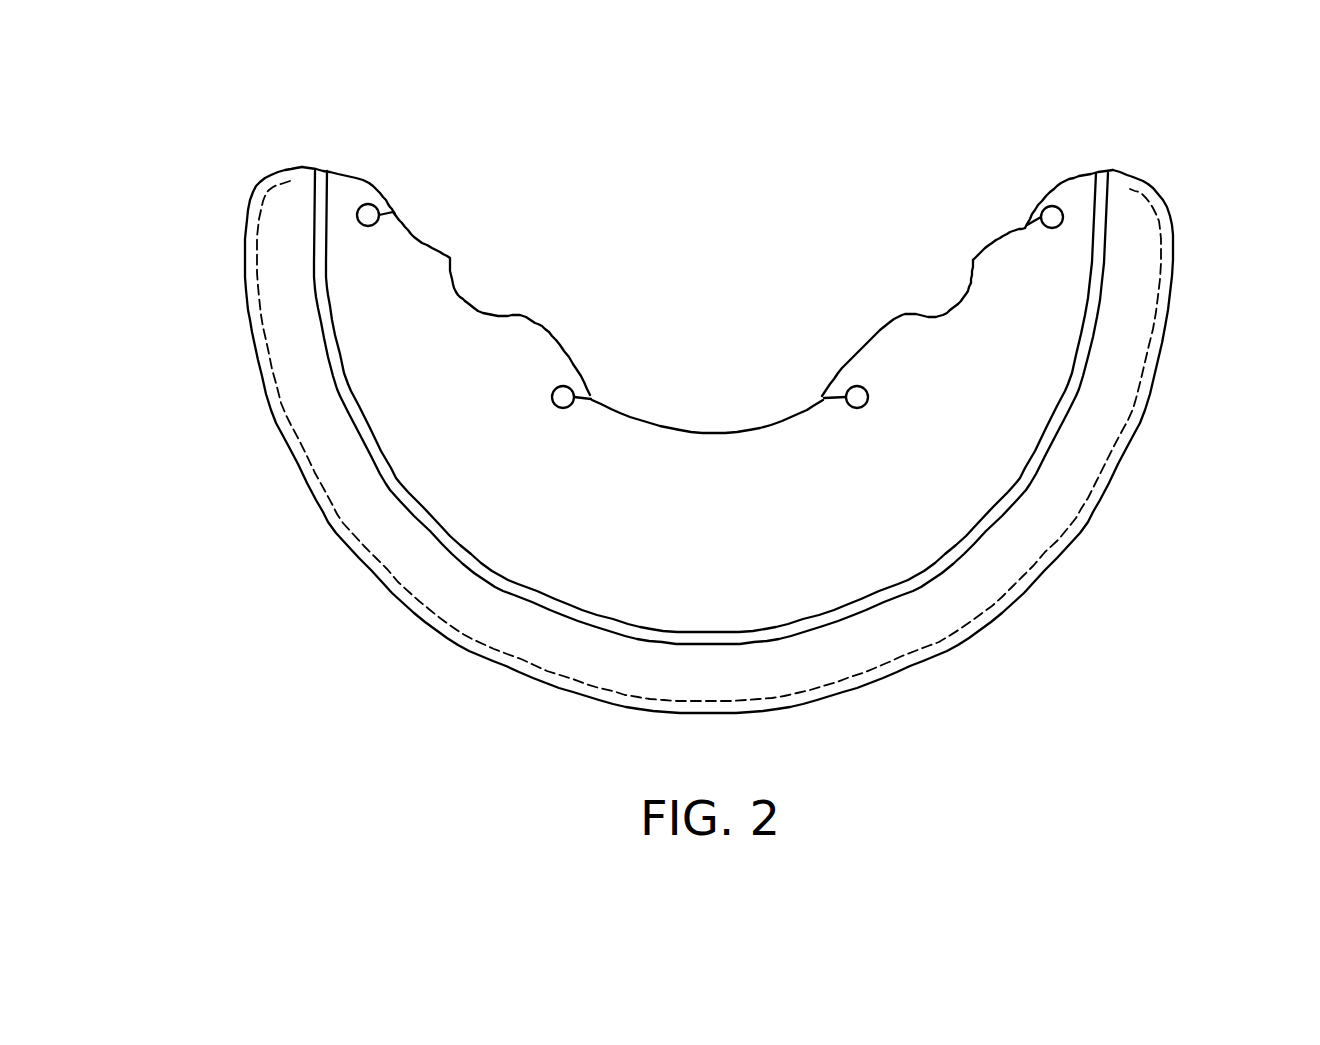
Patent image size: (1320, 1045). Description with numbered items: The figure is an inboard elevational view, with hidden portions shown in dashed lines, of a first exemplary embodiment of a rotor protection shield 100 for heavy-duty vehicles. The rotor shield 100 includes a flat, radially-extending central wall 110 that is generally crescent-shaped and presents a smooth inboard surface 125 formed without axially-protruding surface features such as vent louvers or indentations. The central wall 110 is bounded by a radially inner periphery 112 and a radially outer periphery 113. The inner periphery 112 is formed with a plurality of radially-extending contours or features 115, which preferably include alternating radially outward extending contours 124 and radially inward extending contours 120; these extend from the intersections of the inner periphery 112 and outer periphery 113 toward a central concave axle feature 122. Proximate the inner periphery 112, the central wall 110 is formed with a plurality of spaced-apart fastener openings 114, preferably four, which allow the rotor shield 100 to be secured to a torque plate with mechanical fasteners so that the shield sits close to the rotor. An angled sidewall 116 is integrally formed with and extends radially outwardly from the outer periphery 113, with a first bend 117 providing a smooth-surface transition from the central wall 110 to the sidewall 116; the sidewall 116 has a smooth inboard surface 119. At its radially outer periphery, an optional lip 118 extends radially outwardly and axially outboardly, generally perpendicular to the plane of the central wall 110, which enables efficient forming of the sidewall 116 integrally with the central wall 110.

The rotor protection shield 100 is at (244, 117).
The central wall 110 is at (927, 553).
The radially inner periphery 112 is at (333, 173).
The radially outer periphery 113 is at (1060, 413).
The fastener openings 114 is at (395, 212).
The radially-extending contours or features 115 is at (462, 248).
The angled sidewall 116 is at (517, 647).
The first bend 117 is at (853, 610).
The lip 118 is at (307, 467).
The inboard surface of sidewall 119 is at (1135, 278).
The radially inward extending contours 120 is at (467, 300).
The central concave axle feature 122 is at (712, 433).
The radially outward extending contours 124 is at (423, 258).
The inboard surface of central wall 125 is at (1067, 342).